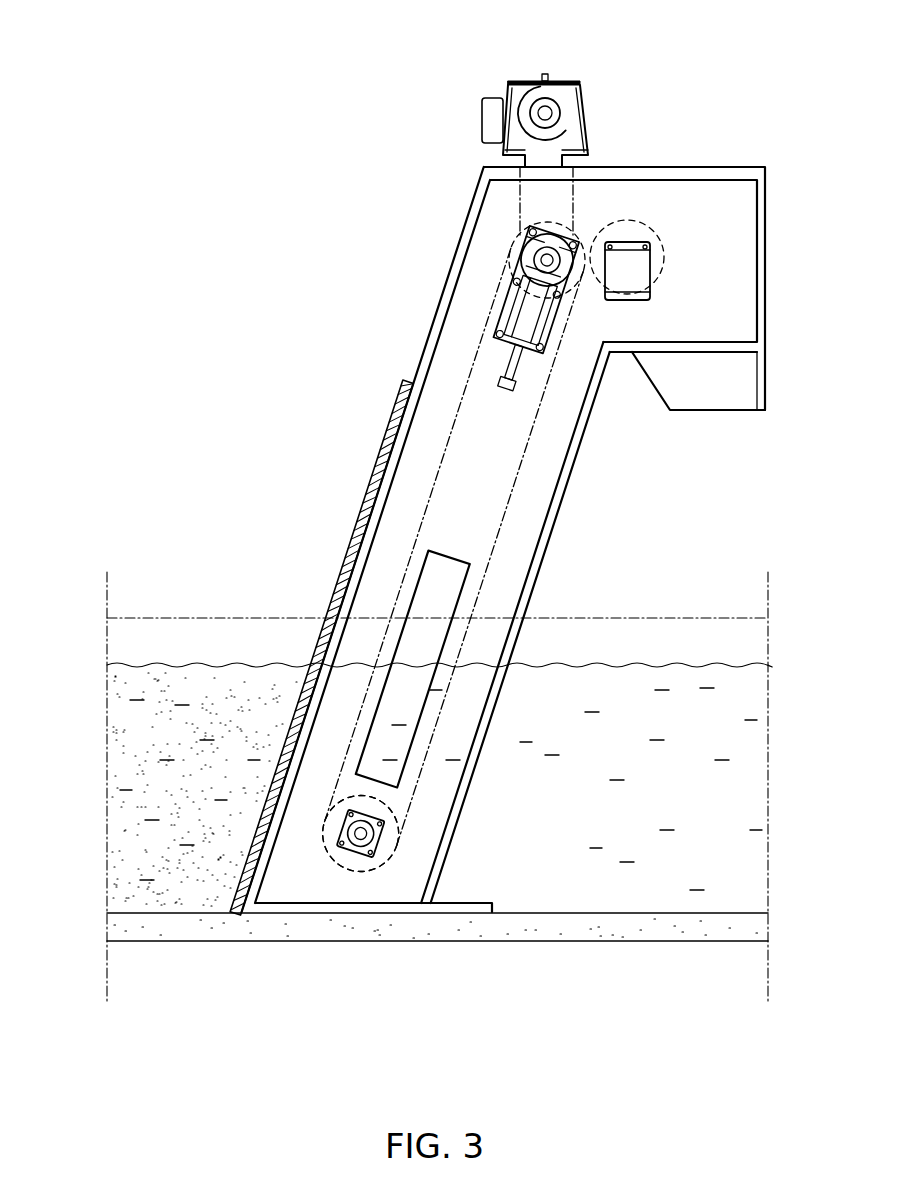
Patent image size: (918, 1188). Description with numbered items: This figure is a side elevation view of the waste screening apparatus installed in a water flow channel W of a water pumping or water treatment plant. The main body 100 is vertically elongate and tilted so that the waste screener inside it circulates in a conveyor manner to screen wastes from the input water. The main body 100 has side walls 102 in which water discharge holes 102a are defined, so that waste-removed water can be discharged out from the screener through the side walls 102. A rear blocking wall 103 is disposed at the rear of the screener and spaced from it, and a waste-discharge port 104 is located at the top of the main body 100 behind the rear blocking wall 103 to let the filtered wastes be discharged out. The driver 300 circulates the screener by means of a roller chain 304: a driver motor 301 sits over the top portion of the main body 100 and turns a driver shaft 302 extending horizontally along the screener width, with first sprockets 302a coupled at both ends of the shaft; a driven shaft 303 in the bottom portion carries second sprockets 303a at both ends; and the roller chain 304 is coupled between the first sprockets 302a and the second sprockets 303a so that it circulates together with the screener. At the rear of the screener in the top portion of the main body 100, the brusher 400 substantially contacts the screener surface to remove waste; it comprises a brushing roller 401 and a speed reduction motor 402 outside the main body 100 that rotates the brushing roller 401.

The main body 100 is at (385, 400).
The side walls 102 is at (547, 532).
The water discharge holes 102a is at (450, 615).
The rear blocking wall 103 is at (500, 698).
The waste-discharge port 104 is at (727, 410).
The driver 300 is at (473, 130).
The driver motor 301 is at (517, 92).
The driver shaft 302 is at (530, 240).
The first sprockets 302a is at (517, 248).
The driven shaft 303 is at (365, 838).
The second sprockets 303a is at (392, 808).
The roller chain 304 is at (426, 507).
The brusher 400 is at (710, 102).
The brushing roller 401 is at (620, 222).
The speed reduction motor 402 is at (650, 266).
The water flow channel W is at (598, 917).